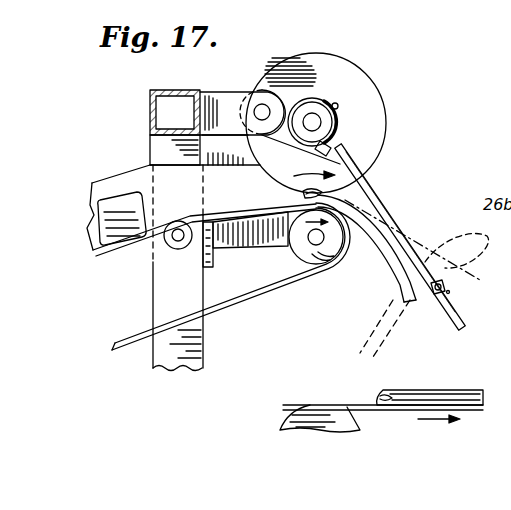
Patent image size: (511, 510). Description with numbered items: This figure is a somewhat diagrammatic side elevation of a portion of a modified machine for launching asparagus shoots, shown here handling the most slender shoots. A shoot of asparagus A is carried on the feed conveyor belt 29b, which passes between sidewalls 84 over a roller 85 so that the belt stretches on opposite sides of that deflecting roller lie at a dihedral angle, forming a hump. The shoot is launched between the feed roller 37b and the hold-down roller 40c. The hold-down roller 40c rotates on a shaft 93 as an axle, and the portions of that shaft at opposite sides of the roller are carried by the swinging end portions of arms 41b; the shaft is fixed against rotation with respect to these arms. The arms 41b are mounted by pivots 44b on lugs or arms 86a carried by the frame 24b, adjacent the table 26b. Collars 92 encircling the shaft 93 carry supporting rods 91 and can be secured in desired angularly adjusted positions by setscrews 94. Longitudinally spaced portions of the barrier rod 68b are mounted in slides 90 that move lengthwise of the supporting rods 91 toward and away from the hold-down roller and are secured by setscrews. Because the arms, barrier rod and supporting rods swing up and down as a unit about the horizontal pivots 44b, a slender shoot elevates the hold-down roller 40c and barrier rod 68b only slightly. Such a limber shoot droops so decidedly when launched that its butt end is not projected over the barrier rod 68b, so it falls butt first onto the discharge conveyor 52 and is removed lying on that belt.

The machine frame 24b is at (150, 149).
The sidewalls 84 is at (241, 171).
The table plate 26b is at (90, 230).
The roller 85 is at (170, 242).
The feed roller 37b is at (300, 254).
The feed conveyor belt 29b is at (245, 303).
The hold-down roller 40c is at (384, 103).
The lugs or arms 86a is at (236, 81).
The pivots 44b is at (262, 106).
The arms 41b is at (302, 100).
The shaft 93 is at (320, 123).
The collars 92 is at (342, 150).
The setscrews 94 is at (338, 103).
The supporting rods 91 is at (376, 190).
The slides 90 is at (440, 300).
The shoot of asparagus A is at (392, 264).
The discharge conveyor 52 is at (343, 405).
The barrier rod 68b is at (450, 292).